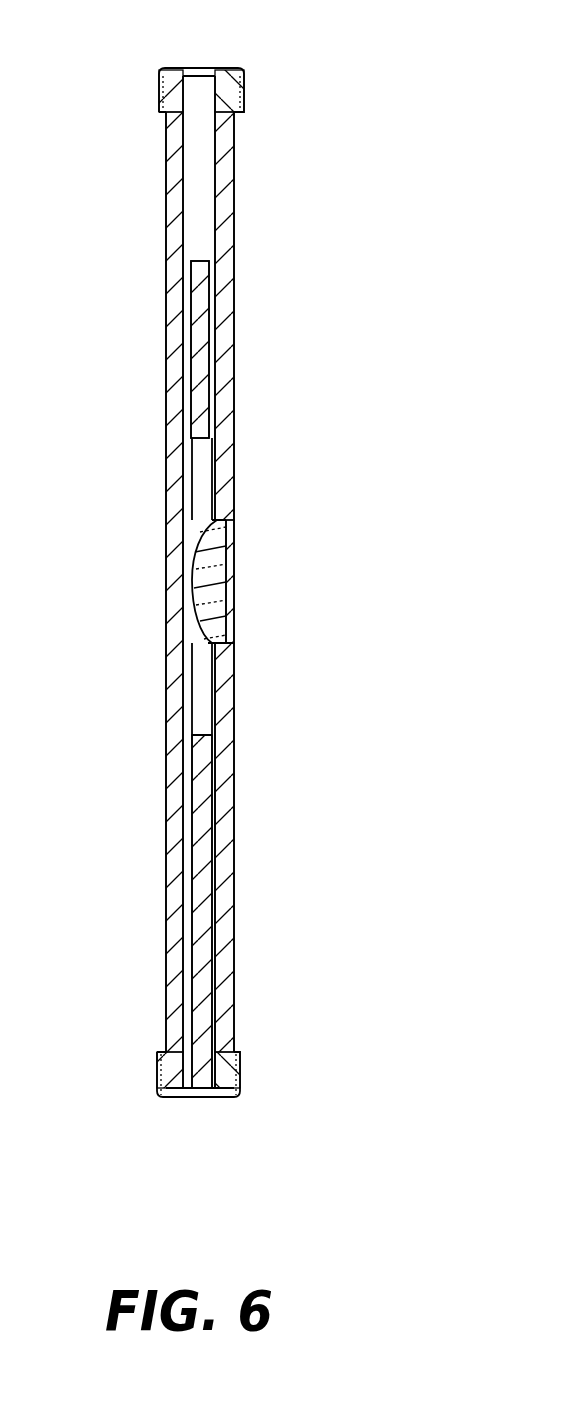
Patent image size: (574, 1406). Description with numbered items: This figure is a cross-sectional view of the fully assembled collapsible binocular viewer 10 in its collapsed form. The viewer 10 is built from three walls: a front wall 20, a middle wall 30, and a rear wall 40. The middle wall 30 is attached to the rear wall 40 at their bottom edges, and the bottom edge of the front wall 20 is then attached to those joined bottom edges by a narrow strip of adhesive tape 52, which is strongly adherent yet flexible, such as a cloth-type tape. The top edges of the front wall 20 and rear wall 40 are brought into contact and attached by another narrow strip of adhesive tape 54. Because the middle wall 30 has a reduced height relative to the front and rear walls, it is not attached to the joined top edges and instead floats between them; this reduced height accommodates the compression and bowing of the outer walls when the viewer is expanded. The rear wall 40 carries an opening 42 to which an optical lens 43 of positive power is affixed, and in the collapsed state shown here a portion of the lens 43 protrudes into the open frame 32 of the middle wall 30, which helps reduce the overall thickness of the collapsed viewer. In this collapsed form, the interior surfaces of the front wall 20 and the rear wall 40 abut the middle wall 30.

The collapsible binocular viewer 10 is at (340, 197).
The front wall 20 is at (166, 174).
The middle wall 30 is at (190, 341).
The left open frame 32 is at (192, 491).
The rear wall 40 is at (235, 342).
The left opening 42 is at (230, 608).
The optical lens 43 is at (205, 613).
The adhesive tape 52 is at (206, 1097).
The adhesive tape 54 is at (201, 67).